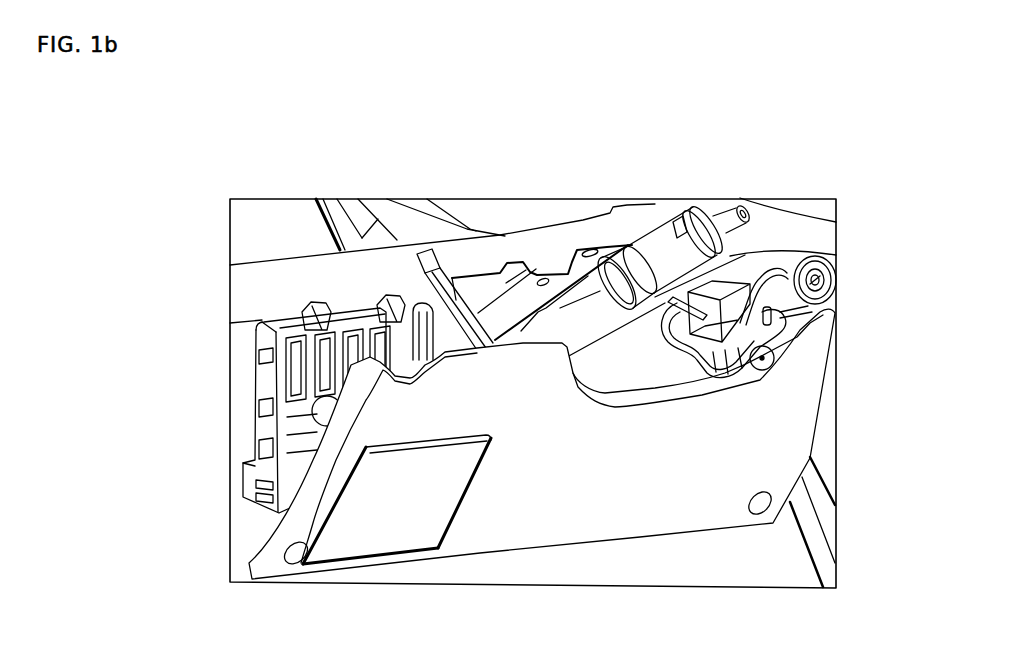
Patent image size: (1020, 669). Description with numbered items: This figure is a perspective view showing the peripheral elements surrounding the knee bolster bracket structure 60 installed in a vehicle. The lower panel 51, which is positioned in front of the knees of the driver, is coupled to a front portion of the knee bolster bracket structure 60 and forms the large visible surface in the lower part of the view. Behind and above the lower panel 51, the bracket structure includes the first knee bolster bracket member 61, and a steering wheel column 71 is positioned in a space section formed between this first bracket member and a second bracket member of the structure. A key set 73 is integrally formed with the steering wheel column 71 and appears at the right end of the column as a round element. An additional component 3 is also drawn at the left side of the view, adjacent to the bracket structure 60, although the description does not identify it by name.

The connector / control unit 3 is at (340, 332).
The lower panel 51 is at (612, 518).
The knee bolster bracket structure 60 is at (470, 280).
The first knee bolster bracket member 61 is at (402, 293).
The steering wheel column 71 is at (654, 248).
The key set 73 is at (787, 280).